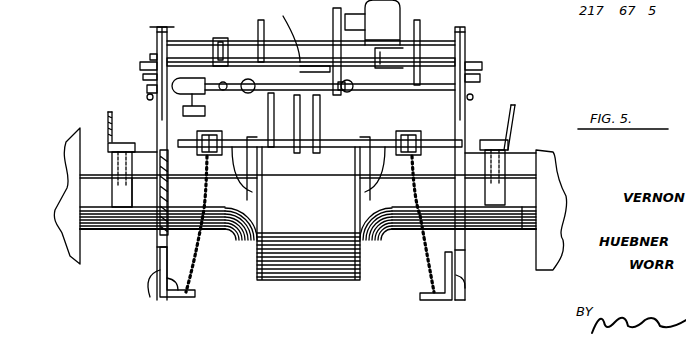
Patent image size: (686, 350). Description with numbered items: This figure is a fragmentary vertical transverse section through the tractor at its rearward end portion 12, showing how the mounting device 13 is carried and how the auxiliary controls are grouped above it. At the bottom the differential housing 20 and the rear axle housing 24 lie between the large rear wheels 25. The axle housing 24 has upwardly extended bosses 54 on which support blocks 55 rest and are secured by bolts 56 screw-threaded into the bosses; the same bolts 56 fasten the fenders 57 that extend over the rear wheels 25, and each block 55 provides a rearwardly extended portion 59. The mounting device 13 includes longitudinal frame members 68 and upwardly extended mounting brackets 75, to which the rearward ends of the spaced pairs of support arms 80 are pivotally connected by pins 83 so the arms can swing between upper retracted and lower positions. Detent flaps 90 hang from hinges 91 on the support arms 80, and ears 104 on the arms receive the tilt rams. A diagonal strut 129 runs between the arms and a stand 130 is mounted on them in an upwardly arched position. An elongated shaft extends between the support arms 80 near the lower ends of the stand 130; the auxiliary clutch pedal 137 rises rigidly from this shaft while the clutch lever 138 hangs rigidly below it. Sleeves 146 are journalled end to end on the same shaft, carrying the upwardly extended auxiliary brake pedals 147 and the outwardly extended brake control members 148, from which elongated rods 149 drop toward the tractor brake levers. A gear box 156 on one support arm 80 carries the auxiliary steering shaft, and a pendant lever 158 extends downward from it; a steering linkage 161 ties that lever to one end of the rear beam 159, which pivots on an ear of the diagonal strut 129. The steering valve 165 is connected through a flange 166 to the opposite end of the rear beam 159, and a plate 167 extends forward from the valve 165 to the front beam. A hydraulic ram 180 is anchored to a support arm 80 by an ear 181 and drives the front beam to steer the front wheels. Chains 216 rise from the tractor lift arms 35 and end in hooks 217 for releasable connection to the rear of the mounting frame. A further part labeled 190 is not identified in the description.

The rearward end portion 12 is at (280, 263).
The mounting device 13 is at (463, 311).
The differential housing 20 is at (332, 270).
The rear axle housing 24 is at (523, 229).
The rear wheels 25 is at (66, 182).
The lift arms 35 is at (245, 165).
The bosses 54 is at (122, 207).
The support blocks 55 is at (113, 165).
The bolts 56 is at (111, 122).
The fenders 57 is at (109, 112).
The rearwardly extended portions 59 is at (160, 232).
The longitudinal frame members 68 is at (180, 297).
The mounting brackets 75 is at (160, 250).
The support arms 80 is at (141, 66).
The pins 83 is at (145, 77).
The detent flaps 90 is at (157, 133).
The hinges 91 is at (147, 97).
The ears 104 is at (157, 43).
The diagonal strut 129 is at (322, 72).
The stand 130 is at (157, 32).
The auxiliary clutch pedal 137 is at (418, 40).
The clutch lever 138 is at (148, 89).
The sleeves 146 is at (260, 42).
The auxiliary brake pedals 147 is at (283, 16).
The brake control members 148 is at (185, 58).
The elongated rods 149 is at (402, 111).
The gear box 156 is at (400, 15).
The pendant lever 158 is at (334, 40).
The rear beam 159 is at (318, 153).
The steering linkage 161 is at (353, 86).
The steering valve 165 is at (222, 38).
The flange 166 is at (298, 153).
The plate 167 is at (275, 160).
The hydraulic ram 180 is at (200, 156).
The ear 181 is at (150, 57).
The post cap 190 is at (170, 27).
The chains 216 is at (198, 262).
The hooks 217 is at (152, 285).